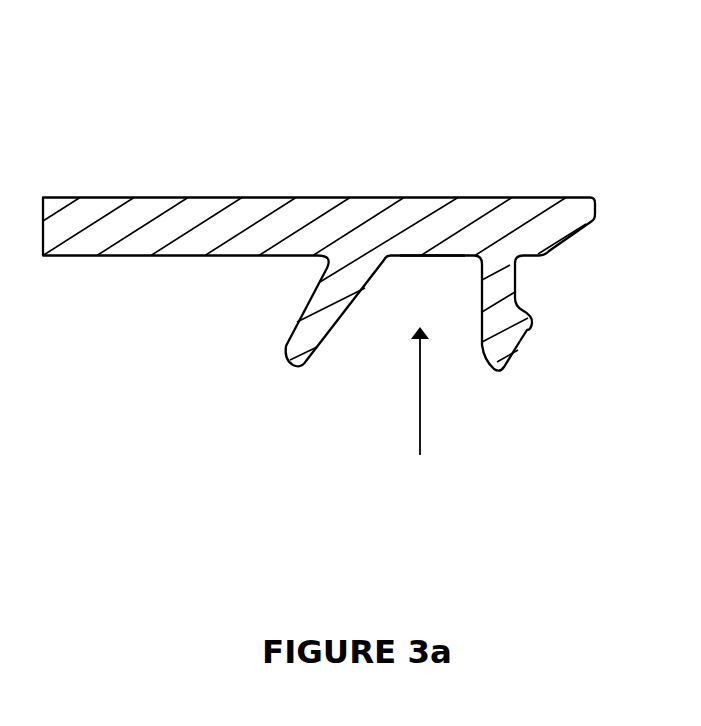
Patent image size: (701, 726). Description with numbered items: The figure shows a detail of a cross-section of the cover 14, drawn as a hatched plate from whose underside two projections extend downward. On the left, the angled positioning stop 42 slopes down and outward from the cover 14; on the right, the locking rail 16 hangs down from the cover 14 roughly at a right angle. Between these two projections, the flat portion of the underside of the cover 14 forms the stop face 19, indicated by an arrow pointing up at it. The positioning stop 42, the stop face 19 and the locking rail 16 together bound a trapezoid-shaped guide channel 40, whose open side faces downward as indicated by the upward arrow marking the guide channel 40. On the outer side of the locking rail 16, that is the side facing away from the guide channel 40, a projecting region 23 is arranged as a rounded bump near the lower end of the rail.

The cover 14 is at (127, 213).
The stop face 19 is at (424, 241).
The locking rail 16 is at (497, 313).
The projecting region 23 is at (528, 327).
The positioning stop 42 is at (312, 303).
The guide channel 40 is at (415, 410).